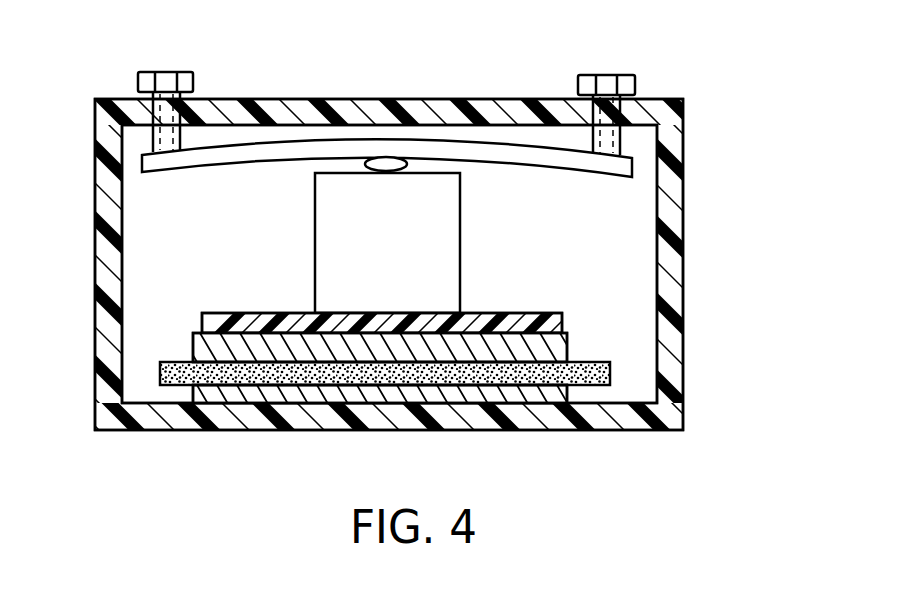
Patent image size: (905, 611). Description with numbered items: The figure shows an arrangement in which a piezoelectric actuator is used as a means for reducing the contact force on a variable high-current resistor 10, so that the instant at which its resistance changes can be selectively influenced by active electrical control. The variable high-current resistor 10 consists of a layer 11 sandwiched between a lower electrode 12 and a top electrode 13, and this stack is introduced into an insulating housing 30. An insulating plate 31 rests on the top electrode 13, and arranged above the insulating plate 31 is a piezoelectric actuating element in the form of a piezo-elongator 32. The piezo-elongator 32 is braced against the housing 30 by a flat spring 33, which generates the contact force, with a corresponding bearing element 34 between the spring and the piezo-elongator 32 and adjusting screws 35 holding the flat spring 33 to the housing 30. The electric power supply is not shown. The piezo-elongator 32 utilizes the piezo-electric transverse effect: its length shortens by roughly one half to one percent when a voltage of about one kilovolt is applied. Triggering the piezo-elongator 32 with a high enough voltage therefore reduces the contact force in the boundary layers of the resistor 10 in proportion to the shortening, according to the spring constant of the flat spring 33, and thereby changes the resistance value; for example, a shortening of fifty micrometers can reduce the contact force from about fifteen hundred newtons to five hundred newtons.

The variable high-current resistor 10 is at (515, 368).
The layer 11 is at (610, 379).
The electrode 12 is at (552, 398).
The top electrode 13 is at (567, 362).
The insulating housing 30 is at (234, 414).
The insulating plate 31 is at (547, 320).
The piezoelectric actuating element 32 is at (432, 230).
The flat spring 33 is at (452, 150).
The bearing element 34 is at (388, 157).
The adjusting screws 35 is at (193, 80).